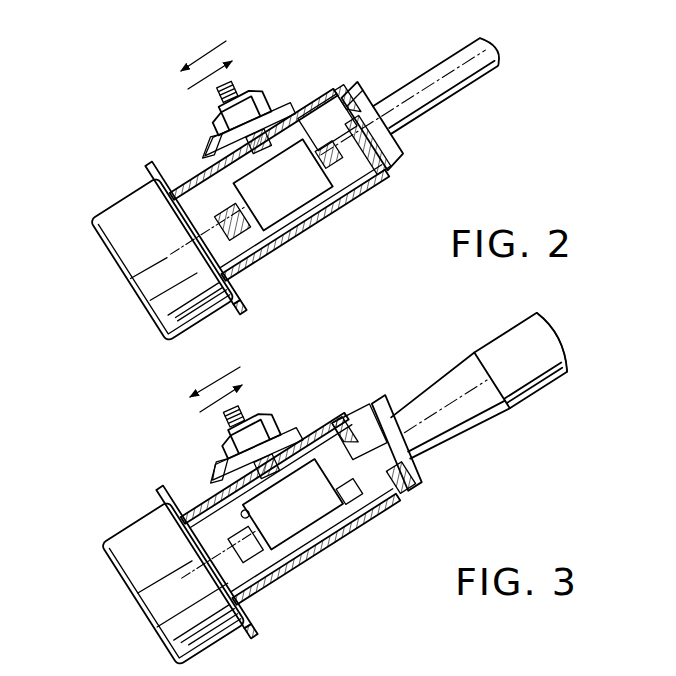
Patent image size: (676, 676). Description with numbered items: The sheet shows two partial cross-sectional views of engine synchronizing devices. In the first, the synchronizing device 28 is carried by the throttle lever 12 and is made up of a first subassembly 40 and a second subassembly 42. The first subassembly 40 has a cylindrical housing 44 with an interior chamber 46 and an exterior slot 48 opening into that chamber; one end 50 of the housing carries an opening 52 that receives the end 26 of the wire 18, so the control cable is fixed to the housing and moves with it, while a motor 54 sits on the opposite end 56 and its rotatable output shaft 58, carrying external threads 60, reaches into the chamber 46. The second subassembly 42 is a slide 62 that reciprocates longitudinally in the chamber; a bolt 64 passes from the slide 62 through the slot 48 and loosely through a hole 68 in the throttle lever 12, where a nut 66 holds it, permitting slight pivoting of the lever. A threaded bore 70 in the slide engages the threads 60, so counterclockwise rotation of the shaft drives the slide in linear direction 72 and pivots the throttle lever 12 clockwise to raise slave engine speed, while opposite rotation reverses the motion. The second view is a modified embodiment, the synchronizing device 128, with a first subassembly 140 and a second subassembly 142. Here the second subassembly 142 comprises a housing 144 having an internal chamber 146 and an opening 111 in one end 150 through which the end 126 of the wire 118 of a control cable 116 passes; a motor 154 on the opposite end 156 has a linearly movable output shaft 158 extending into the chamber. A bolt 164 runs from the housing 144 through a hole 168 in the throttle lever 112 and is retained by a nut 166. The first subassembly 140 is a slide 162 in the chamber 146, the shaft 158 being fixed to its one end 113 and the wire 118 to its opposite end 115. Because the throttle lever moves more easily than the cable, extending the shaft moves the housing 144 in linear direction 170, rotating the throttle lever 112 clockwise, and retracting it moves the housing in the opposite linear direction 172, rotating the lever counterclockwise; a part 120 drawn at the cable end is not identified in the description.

In FIG. 2, the throttle lever 12 is at (205, 153).
In FIG. 2, the wire 18 is at (458, 86).
In FIG. 2, the end of wire 26 is at (386, 168).
In FIG. 2, the synchronizing device 28 is at (110, 203).
In FIG. 2, the first subassembly 40 is at (386, 90).
In FIG. 2, the second subassembly 42 is at (343, 178).
In FIG. 2, the cylindrical housing 44 is at (302, 222).
In FIG. 2, the interior chamber 46 is at (324, 133).
In FIG. 2, the exterior slot 48 is at (304, 128).
In FIG. 2, the end of housing 50 is at (405, 140).
In FIG. 2, the opening 52 is at (362, 88).
In FIG. 2, the motor 54 is at (118, 284).
In FIG. 2, the opposite end of housing 56 is at (195, 235).
In FIG. 2, the output shaft 58 is at (222, 210).
In FIG. 2, the external threads 60 is at (240, 250).
In FIG. 2, the slide 62 is at (268, 204).
In FIG. 2, the bolt 64 is at (218, 96).
In FIG. 2, the nut 66 is at (250, 88).
In FIG. 2, the hole 68 is at (207, 142).
In FIG. 2, the bore 70 is at (228, 52).
In FIG. 2, the linear direction 72 is at (202, 57).
In FIG. 3, the opening 111 is at (319, 485).
In FIG. 3, the throttle lever 112 is at (212, 472).
In FIG. 3, the end of slide 113 is at (250, 507).
In FIG. 3, the opposite end of slide 115 is at (344, 506).
In FIG. 3, the control cable 116 is at (522, 406).
In FIG. 3, the wire 118 is at (449, 410).
In FIG. 3, the knob 120 is at (505, 346).
In FIG. 3, the end of wire 126 is at (381, 502).
In FIG. 3, the synchronizing device 128 is at (105, 567).
In FIG. 3, the first subassembly 140 is at (262, 549).
In FIG. 3, the second subassembly 142 is at (389, 414).
In FIG. 3, the housing 144 is at (318, 532).
In FIG. 3, the internal chamber 146 is at (355, 414).
In FIG. 3, the end of housing 150 is at (418, 462).
In FIG. 3, the motor 154 is at (157, 604).
In FIG. 3, the opposite end of housing 156 is at (228, 586).
In FIG. 3, the output shaft 158 is at (213, 507).
In FIG. 3, the slide 162 is at (302, 546).
In FIG. 3, the bolt 164 is at (226, 418).
In FIG. 3, the nut 166 is at (267, 414).
In FIG. 3, the hole 168 is at (284, 437).
In FIG. 3, the linear direction 170 is at (230, 390).
In FIG. 3, the opposite linear direction 172 is at (215, 385).